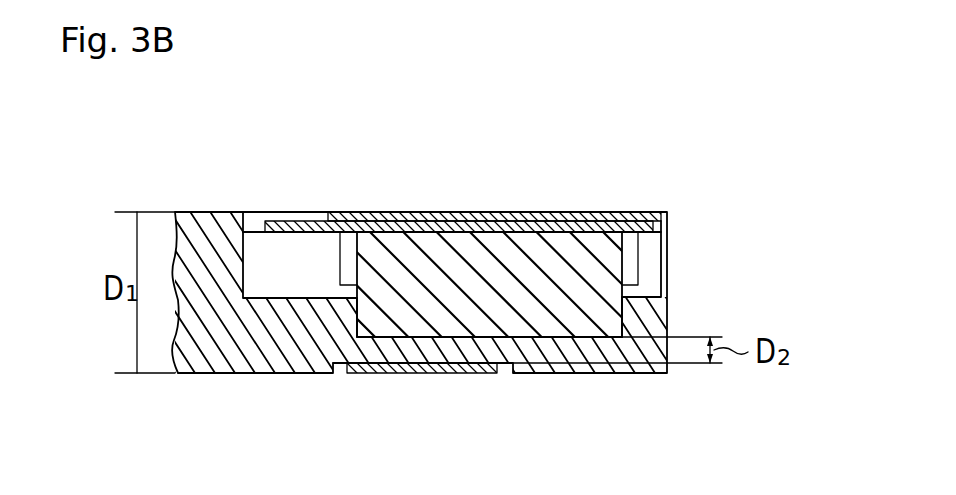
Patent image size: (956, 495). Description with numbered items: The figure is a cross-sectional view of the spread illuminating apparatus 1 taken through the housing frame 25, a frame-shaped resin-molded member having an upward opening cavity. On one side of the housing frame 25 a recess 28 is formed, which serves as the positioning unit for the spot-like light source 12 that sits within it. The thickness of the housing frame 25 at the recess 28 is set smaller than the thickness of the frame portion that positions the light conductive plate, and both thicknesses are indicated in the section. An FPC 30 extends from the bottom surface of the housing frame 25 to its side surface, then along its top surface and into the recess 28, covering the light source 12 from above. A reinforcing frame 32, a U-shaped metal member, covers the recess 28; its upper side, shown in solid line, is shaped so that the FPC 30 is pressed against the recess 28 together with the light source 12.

The spread illuminating apparatus 1 is at (521, 183).
The spot-like light source 12 is at (451, 268).
The housing frame 25 is at (209, 212).
The recess 28 is at (560, 330).
The FPC 30 is at (314, 212).
The reinforcing frame 32 is at (578, 212).